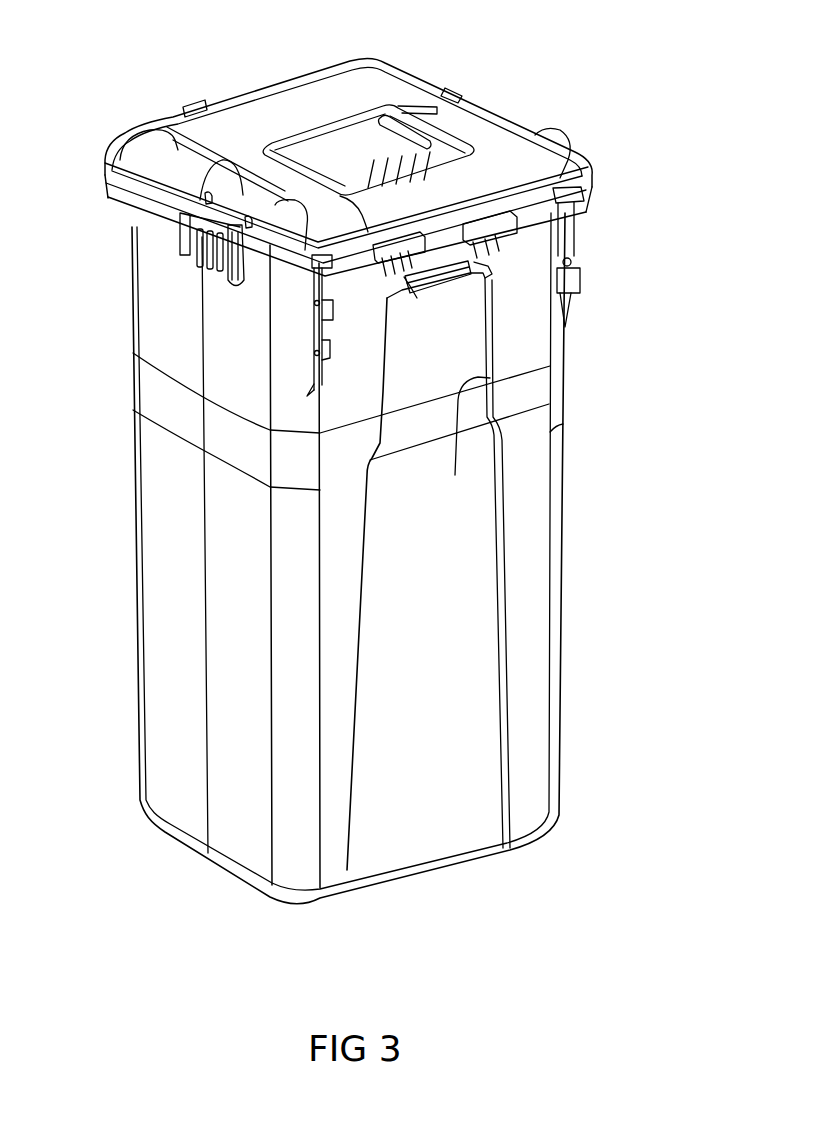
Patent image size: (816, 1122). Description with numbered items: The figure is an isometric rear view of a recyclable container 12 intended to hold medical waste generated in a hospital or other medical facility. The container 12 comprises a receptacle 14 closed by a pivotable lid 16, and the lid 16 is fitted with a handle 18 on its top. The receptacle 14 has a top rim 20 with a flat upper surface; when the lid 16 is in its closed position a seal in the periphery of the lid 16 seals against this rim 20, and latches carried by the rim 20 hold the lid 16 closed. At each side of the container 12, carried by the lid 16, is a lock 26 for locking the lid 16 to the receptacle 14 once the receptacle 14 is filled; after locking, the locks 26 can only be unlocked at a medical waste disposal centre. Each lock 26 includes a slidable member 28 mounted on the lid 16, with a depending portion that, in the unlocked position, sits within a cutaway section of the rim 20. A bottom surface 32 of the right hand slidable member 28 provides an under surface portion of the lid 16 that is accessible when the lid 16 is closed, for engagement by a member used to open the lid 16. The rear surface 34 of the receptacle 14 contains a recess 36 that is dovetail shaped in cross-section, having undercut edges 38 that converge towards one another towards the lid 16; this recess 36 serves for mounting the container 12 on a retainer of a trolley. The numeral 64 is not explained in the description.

The recyclable container 12 is at (599, 116).
The receptacle 14 is at (163, 558).
The pivotable lid 16 is at (298, 100).
The handle 18 is at (443, 143).
The top rim 20 is at (115, 197).
The lock 26 is at (205, 269).
The slidable member 28 is at (198, 241).
The bottom surface 32 is at (213, 264).
The rear surface 34 is at (533, 287).
The recess 36 is at (457, 352).
The undercut edges 38 is at (382, 390).
The hook 64 is at (417, 288).